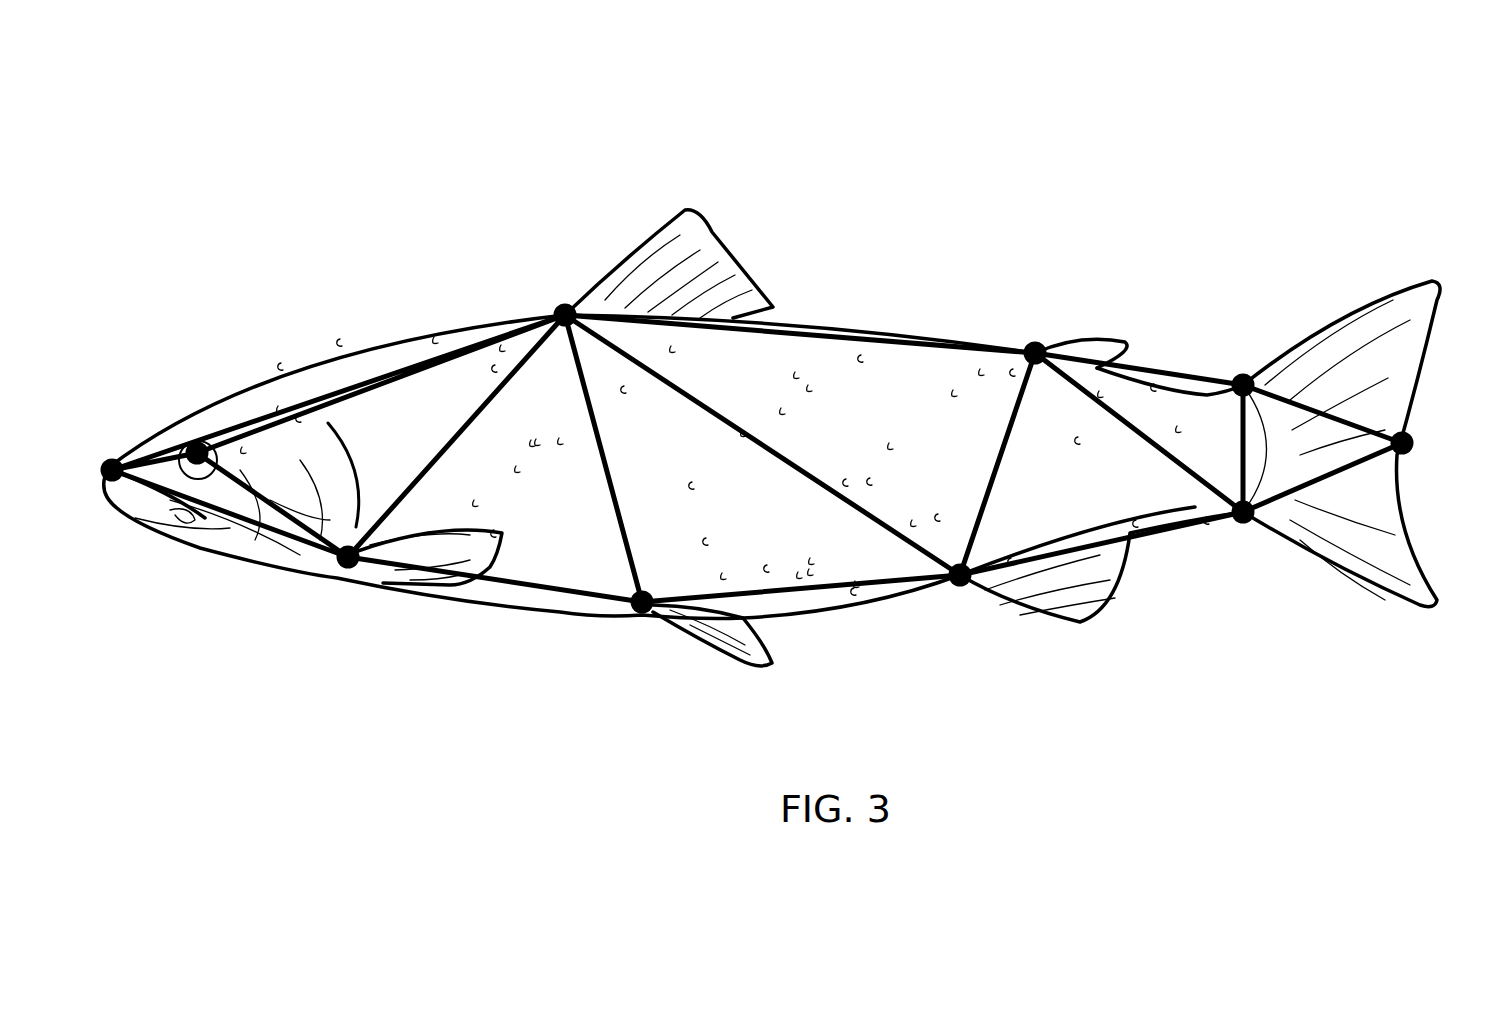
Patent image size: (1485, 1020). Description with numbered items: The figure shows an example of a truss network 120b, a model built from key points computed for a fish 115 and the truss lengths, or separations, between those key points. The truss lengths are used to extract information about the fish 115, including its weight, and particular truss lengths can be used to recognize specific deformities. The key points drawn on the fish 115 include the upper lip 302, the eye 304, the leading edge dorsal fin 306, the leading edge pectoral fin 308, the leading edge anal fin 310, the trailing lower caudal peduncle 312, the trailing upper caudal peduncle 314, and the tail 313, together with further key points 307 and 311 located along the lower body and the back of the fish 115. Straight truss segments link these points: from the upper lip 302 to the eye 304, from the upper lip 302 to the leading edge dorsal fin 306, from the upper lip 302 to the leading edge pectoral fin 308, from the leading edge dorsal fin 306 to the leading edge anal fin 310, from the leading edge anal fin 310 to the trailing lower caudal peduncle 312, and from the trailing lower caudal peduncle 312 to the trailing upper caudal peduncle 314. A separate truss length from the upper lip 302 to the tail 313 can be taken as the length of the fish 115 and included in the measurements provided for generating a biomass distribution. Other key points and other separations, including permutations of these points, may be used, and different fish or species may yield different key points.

The truss network 120b is at (246, 95).
The fish 115 is at (380, 343).
The upper lip 302 is at (117, 452).
The eye 304 is at (203, 435).
The leading edge dorsal fin 306 is at (557, 305).
The pelvic fin node 307 is at (641, 616).
The leading edge pectoral fin 308 is at (342, 571).
The leading edge anal fin 310 is at (956, 592).
The adipose fin node 311 is at (1031, 339).
The trailing lower caudal peduncle 312 is at (1245, 526).
The tail 313 is at (1417, 455).
The trailing upper caudal peduncle 314 is at (1242, 371).